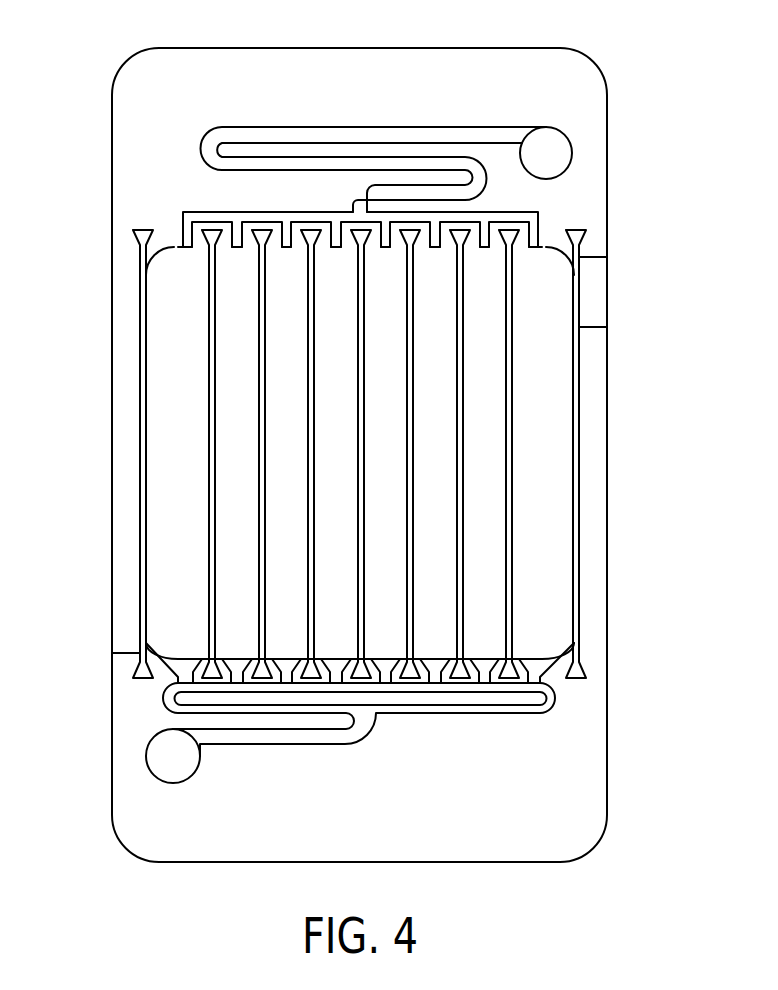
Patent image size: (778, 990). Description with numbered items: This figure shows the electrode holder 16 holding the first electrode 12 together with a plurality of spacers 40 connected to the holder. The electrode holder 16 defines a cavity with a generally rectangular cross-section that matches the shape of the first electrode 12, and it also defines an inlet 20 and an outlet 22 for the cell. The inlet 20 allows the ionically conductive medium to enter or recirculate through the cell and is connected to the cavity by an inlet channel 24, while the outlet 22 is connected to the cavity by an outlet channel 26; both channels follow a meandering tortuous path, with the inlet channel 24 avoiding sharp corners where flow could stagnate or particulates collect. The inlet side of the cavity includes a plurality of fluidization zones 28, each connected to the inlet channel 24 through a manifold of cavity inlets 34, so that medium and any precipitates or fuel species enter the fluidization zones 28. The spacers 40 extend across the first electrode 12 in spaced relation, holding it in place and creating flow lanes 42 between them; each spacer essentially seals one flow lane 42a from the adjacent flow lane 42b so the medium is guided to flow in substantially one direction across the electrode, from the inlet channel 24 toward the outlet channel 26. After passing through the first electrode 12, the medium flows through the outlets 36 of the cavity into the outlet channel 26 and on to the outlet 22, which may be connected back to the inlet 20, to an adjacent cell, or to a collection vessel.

The first electrode 12 is at (347, 457).
The electrode holder 16 is at (128, 100).
The inlet 20 is at (160, 753).
The outlet 22 is at (563, 156).
The inlet channel 24 is at (379, 712).
The outlet channel 26 is at (287, 131).
The fluidization zones 28 is at (480, 662).
The cavity inlets 34 is at (238, 681).
The outlets 36 is at (238, 240).
The spacers 40 is at (458, 415).
The flow lanes 42 is at (170, 412).
The flow lane 42a is at (548, 311).
The adjacent flow lane 42b is at (483, 452).